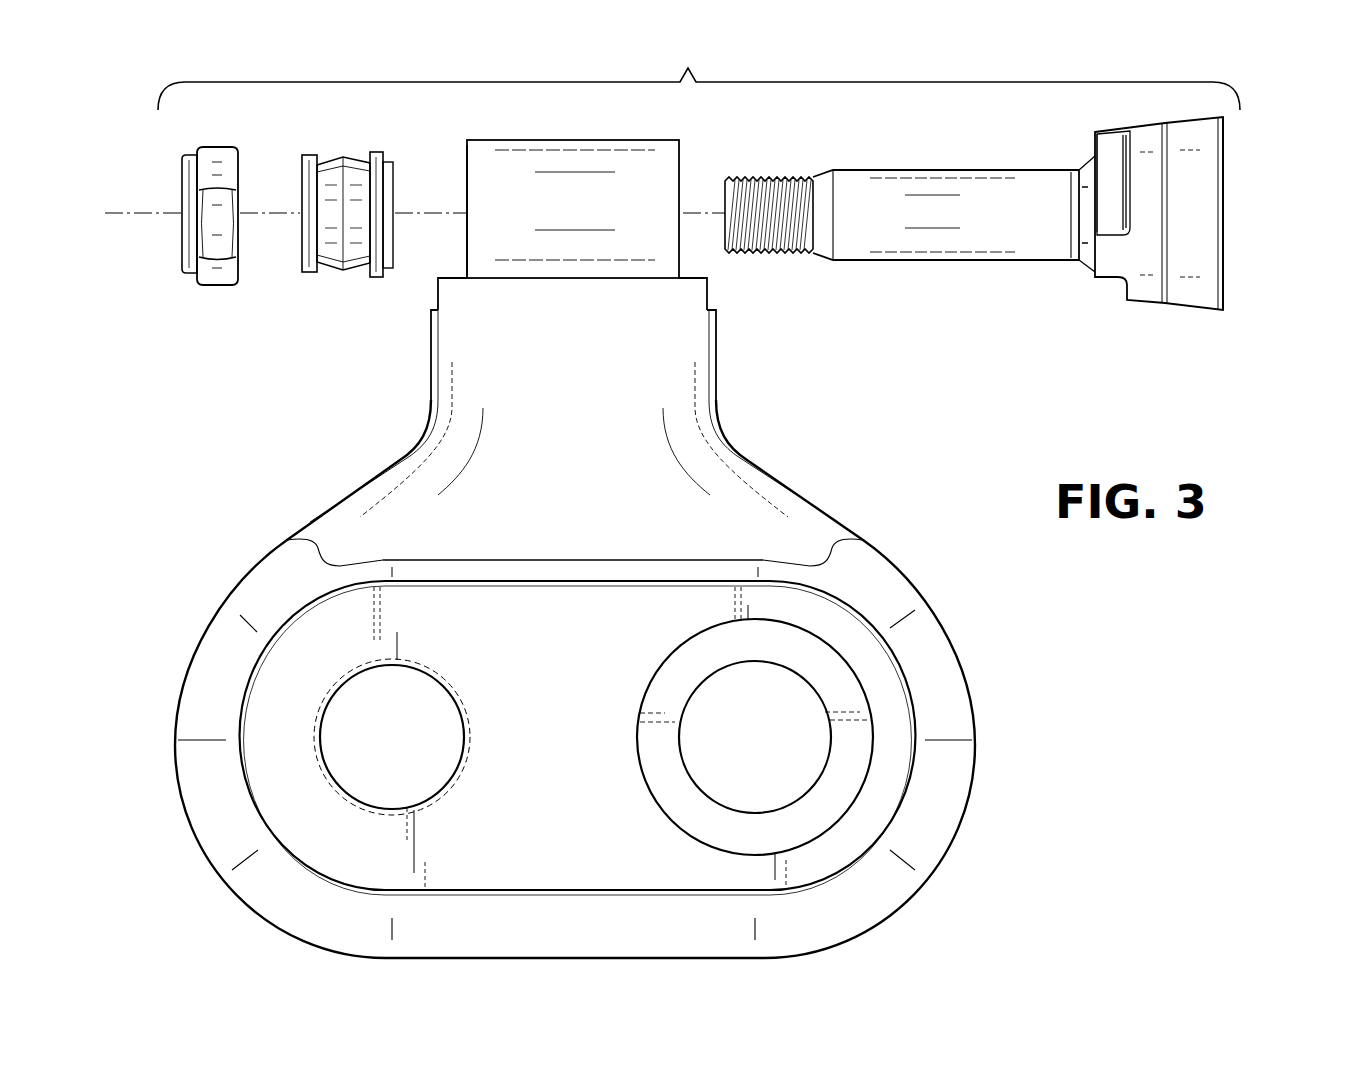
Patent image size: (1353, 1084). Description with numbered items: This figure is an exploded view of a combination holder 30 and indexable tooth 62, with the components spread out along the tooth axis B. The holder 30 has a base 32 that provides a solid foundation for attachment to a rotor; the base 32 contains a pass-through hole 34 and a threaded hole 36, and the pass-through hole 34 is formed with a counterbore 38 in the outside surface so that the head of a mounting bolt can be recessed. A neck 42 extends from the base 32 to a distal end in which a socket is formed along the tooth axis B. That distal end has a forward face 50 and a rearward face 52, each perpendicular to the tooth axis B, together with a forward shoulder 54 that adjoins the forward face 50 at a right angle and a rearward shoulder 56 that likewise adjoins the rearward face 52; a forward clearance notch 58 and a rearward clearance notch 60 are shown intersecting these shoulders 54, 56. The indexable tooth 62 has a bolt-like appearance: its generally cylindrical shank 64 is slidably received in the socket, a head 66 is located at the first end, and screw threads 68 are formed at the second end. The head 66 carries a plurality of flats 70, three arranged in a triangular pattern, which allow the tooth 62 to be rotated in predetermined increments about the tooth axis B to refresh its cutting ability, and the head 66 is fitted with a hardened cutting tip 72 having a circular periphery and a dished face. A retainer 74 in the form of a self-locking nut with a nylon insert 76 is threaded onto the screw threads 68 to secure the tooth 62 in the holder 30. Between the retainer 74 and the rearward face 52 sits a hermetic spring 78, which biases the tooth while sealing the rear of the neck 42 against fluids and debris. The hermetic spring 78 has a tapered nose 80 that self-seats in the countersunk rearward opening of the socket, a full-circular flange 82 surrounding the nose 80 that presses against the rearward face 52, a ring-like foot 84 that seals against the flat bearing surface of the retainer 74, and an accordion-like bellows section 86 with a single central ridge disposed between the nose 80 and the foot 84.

The tooth axis B is at (150, 210).
The holder 30 is at (982, 680).
The base 32 is at (556, 667).
The pass-through hole 34 is at (710, 792).
The threaded hole 36 is at (340, 778).
The counterbore 38 is at (648, 790).
The neck 42 is at (553, 387).
The forward face 50 is at (680, 160).
The rearward face 52 is at (466, 160).
The forward shoulder 54 is at (700, 268).
The rearward shoulder 56 is at (455, 273).
The forward clearance notch 58 is at (712, 302).
The rearward clearance notch 60 is at (435, 300).
The indexable tooth 62 is at (699, 74).
The shank 64 is at (910, 188).
The head 66 is at (1140, 302).
The screw threads 68 is at (758, 178).
The flat 70 is at (1100, 150).
The cutting tip 72 is at (1226, 185).
The retainer 74 is at (215, 286).
The nylon insert 76 is at (180, 228).
The hermetic spring 78 is at (343, 217).
The nose 80 is at (395, 196).
The flange 82 is at (375, 158).
The foot 84 is at (307, 180).
The bellows section 86 is at (343, 160).